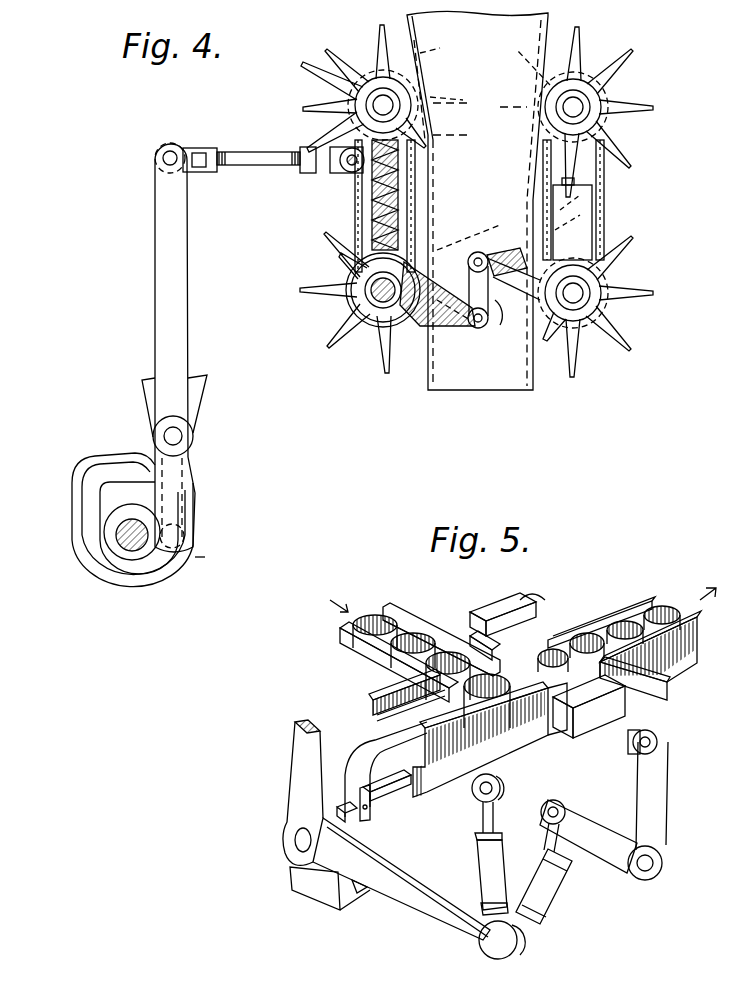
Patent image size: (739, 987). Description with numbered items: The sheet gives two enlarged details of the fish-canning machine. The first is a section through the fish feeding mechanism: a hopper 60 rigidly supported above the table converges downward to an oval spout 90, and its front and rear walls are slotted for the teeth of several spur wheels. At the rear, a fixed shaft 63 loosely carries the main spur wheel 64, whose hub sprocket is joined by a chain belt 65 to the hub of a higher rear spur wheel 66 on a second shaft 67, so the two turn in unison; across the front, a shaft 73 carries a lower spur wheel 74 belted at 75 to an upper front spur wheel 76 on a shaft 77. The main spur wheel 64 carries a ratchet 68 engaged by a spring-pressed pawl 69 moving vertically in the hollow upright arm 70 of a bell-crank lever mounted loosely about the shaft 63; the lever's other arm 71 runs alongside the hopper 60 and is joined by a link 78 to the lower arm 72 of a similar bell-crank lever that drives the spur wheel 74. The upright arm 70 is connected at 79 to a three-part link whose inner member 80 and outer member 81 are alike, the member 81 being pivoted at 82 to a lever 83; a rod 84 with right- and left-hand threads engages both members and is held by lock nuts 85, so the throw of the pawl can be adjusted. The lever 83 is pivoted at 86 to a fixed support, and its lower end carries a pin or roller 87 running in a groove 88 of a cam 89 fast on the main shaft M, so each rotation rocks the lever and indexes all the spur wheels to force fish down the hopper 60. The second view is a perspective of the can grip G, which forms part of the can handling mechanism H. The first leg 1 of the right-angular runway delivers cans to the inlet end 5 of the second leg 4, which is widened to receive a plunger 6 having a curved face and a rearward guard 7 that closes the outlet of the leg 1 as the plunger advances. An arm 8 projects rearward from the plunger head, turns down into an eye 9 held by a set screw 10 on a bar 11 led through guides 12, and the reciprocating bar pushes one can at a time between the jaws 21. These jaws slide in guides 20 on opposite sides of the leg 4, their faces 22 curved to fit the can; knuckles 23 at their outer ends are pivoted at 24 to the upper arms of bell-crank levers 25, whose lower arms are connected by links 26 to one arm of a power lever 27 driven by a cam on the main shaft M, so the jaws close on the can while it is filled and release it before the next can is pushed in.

In FIG. 4, the hopper 60 is at (478, 200).
In FIG. 4, the shaft 63 is at (375, 293).
In FIG. 4, the main spur wheel 64 is at (340, 245).
In FIG. 4, the chain belt 65 is at (355, 196).
In FIG. 4, the rear spur wheel 66 is at (330, 60).
In FIG. 4, the shaft 67 is at (380, 100).
In FIG. 4, the ratchet 68 is at (350, 272).
In FIG. 4, the pawl 69 is at (372, 240).
In FIG. 4, the hollow upright arm 70 is at (415, 204).
In FIG. 4, the other arm of bell-crank lever 71 is at (453, 328).
In FIG. 4, the lower arm 72 is at (480, 262).
In FIG. 4, the shaft 73 is at (577, 296).
In FIG. 4, the lower spur wheel 74 is at (630, 292).
In FIG. 4, the belt 75 is at (604, 188).
In FIG. 4, the upper front spur wheel 76 is at (655, 100).
In FIG. 4, the shaft 77 is at (575, 105).
In FIG. 4, the link 78 is at (485, 325).
In FIG. 4, the connection 79 is at (348, 158).
In FIG. 4, the inner member 80 is at (312, 147).
In FIG. 4, the outer member 81 is at (200, 140).
In FIG. 4, the pivot 82 is at (168, 156).
In FIG. 4, the lever 83 is at (178, 286).
In FIG. 4, the rod 84 is at (258, 156).
In FIG. 4, the lock nuts 85 is at (215, 170).
In FIG. 4, the pivot 86 is at (176, 437).
In FIG. 4, the pin or roller 87 is at (177, 533).
In FIG. 4, the groove 88 is at (108, 563).
In FIG. 4, the cam 89 is at (158, 580).
In FIG. 4, the spout 90 is at (490, 375).
In FIG. 4, the main shaft M is at (118, 530).
In FIG. 5, the runway 1 is at (350, 648).
In FIG. 5, the second leg 4 is at (688, 648).
In FIG. 5, the inlet end 5 is at (488, 716).
In FIG. 5, the plunger 6 is at (410, 716).
In FIG. 5, the guard 7 is at (395, 704).
In FIG. 5, the arm 8 is at (358, 758).
In FIG. 5, the eye 9 is at (352, 818).
In FIG. 5, the set screw 10 is at (372, 810).
In FIG. 5, the bar 11 is at (392, 788).
In FIG. 5, the guides 12 is at (540, 735).
In FIG. 5, the guides 20 is at (498, 600).
In FIG. 5, the jaws 21 is at (570, 659).
In FIG. 5, the faces 22 is at (548, 650).
In FIG. 5, the knuckles 23 is at (652, 742).
In FIG. 5, the pivot 24 is at (640, 748).
In FIG. 5, the bell-crank levers 25 is at (648, 820).
In FIG. 5, the links 26 is at (535, 850).
In FIG. 5, the power lever 27 is at (425, 895).
In FIG. 5, the can grip G is at (527, 593).
In FIG. 5, the can handling mechanism H is at (347, 689).